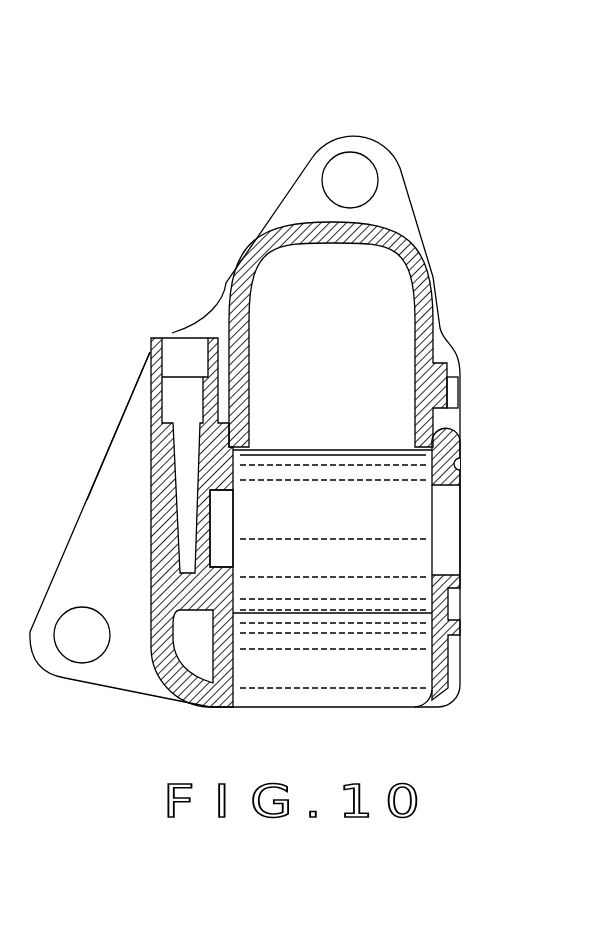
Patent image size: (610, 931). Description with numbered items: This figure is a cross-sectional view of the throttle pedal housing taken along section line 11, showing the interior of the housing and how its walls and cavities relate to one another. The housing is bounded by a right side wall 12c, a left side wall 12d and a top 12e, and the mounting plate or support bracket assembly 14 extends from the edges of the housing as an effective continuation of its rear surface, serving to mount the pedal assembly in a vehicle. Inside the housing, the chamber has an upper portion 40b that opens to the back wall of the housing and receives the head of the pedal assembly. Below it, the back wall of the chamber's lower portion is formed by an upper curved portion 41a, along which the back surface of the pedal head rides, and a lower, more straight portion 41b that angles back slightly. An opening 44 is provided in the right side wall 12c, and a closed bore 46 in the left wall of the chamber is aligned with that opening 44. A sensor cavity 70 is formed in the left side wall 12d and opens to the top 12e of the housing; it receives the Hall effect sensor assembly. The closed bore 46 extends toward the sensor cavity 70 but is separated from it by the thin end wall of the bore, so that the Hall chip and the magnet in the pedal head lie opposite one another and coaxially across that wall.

The section line 11 is at (349, 128).
The mounting plate or support bracket assembly 14 is at (410, 207).
The top 12e is at (318, 218).
The left side wall 12d is at (148, 523).
The right side wall 12c is at (462, 446).
The sensor cavity 70 is at (179, 343).
The upper portion of the chamber 40b is at (311, 389).
The upper curved portion of the back wall 41a is at (320, 523).
The lower straight portion of the back wall 41b is at (315, 675).
The opening 44 is at (448, 490).
The closed bore 46 is at (213, 495).